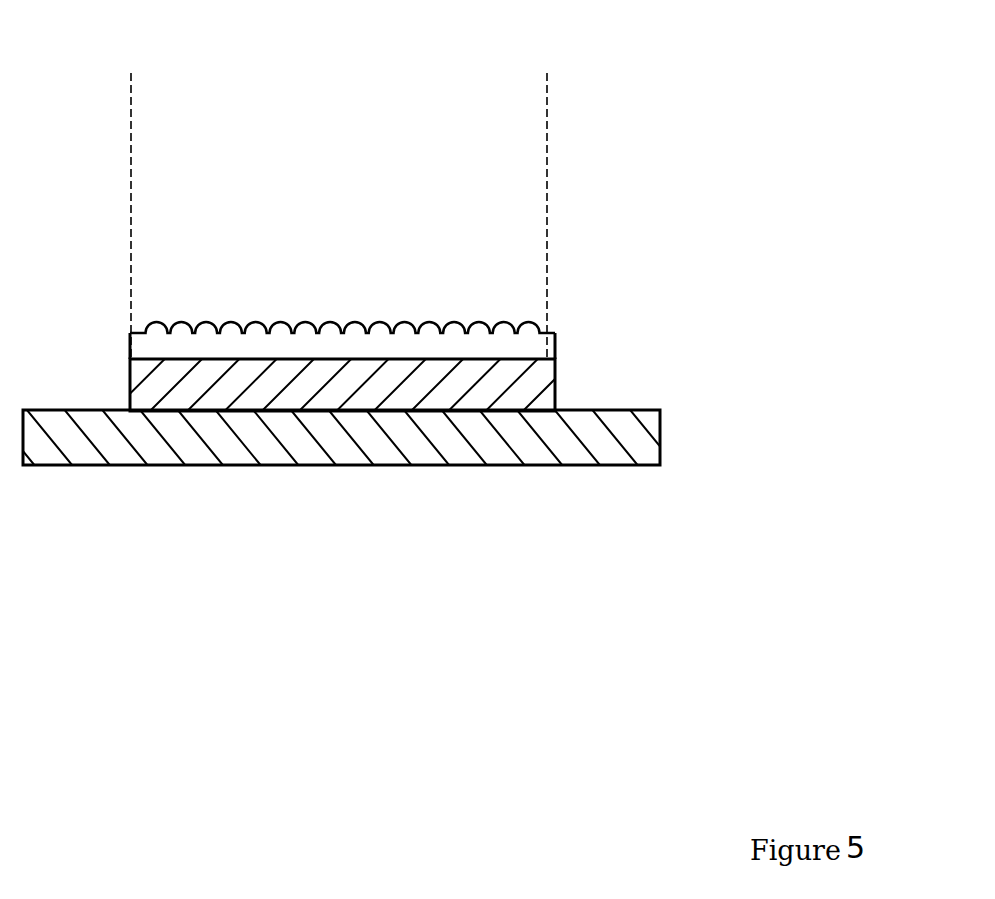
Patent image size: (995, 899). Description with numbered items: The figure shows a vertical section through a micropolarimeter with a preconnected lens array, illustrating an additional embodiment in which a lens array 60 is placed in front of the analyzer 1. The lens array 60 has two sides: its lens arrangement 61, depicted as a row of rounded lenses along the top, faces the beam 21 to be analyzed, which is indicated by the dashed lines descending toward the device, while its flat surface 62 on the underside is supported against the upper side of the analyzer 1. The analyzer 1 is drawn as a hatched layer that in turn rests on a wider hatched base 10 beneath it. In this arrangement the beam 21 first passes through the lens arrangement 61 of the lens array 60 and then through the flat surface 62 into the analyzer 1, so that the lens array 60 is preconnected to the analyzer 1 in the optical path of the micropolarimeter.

The analyzer 1 is at (587, 391).
The substrate 10 is at (703, 442).
The beam 21 is at (488, 163).
The lens array 60 is at (407, 292).
The lens arrangement 61 is at (526, 322).
The flat surface 62 is at (222, 357).